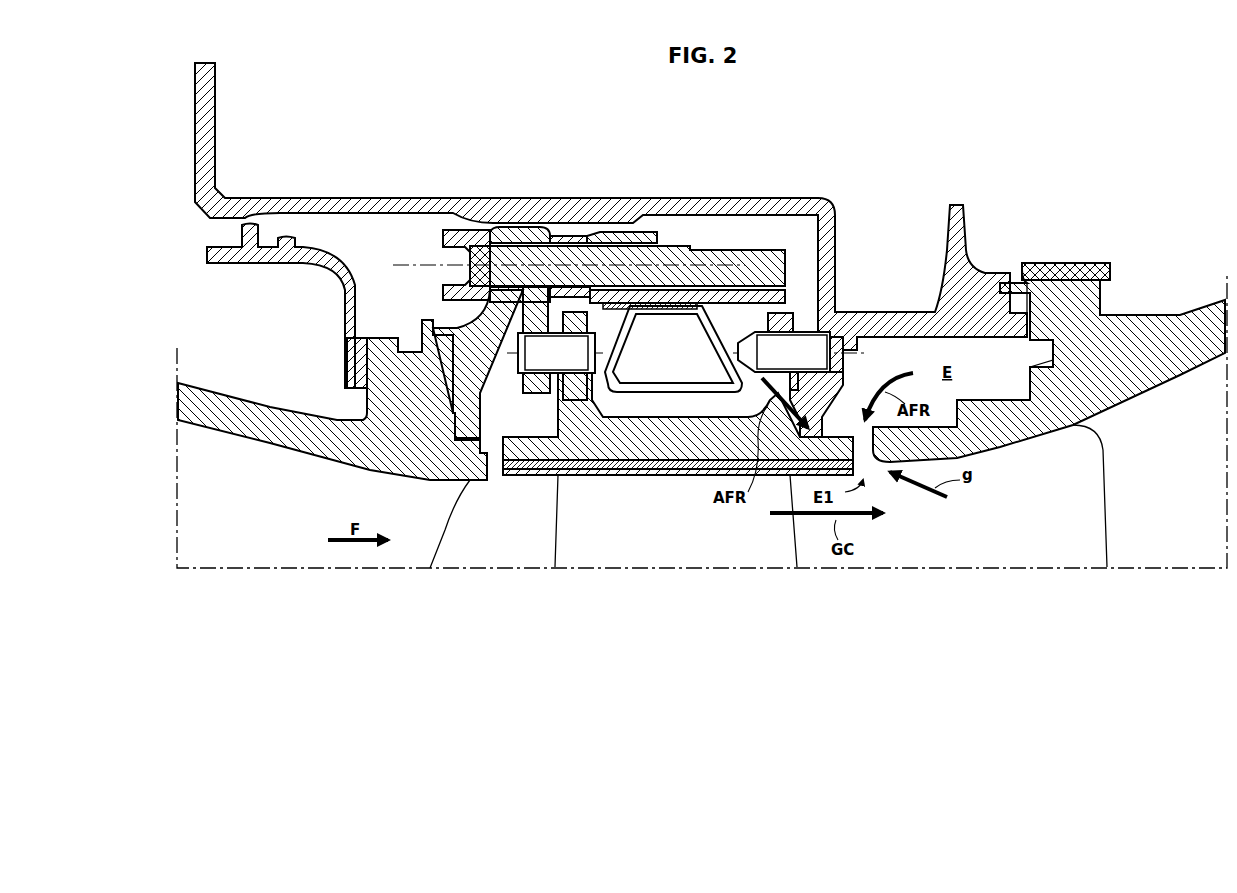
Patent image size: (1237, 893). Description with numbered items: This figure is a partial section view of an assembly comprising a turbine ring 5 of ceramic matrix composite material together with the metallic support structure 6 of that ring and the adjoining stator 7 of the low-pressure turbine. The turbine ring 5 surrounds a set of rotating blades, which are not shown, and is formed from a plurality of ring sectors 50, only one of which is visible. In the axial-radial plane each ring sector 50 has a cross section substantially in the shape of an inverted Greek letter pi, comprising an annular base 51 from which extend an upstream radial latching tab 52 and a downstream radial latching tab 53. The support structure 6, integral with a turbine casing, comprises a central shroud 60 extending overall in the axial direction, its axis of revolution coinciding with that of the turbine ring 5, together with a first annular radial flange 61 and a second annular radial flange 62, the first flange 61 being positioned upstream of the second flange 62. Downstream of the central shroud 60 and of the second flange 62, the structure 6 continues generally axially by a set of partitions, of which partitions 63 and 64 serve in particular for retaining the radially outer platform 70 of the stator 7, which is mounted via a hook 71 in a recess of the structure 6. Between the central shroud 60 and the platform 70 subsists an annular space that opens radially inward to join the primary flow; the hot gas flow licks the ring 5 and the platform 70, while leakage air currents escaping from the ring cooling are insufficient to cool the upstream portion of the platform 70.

The turbine ring 5 is at (676, 500).
The support structure 6 is at (472, 192).
The stator 7 is at (1045, 457).
The ring sector 50 is at (678, 416).
The annular base 51 is at (507, 478).
The upstream radial latching tab 52 is at (577, 317).
The downstream radial latching tab 53 is at (783, 322).
The central shroud 60 is at (588, 212).
The first annular radial flange 61 is at (530, 228).
The second annular radial flange 62 is at (816, 387).
The partition 63 is at (1088, 264).
The partition 64 is at (1003, 332).
The radially outer platform 70 is at (1153, 400).
The hook 71 is at (1012, 302).